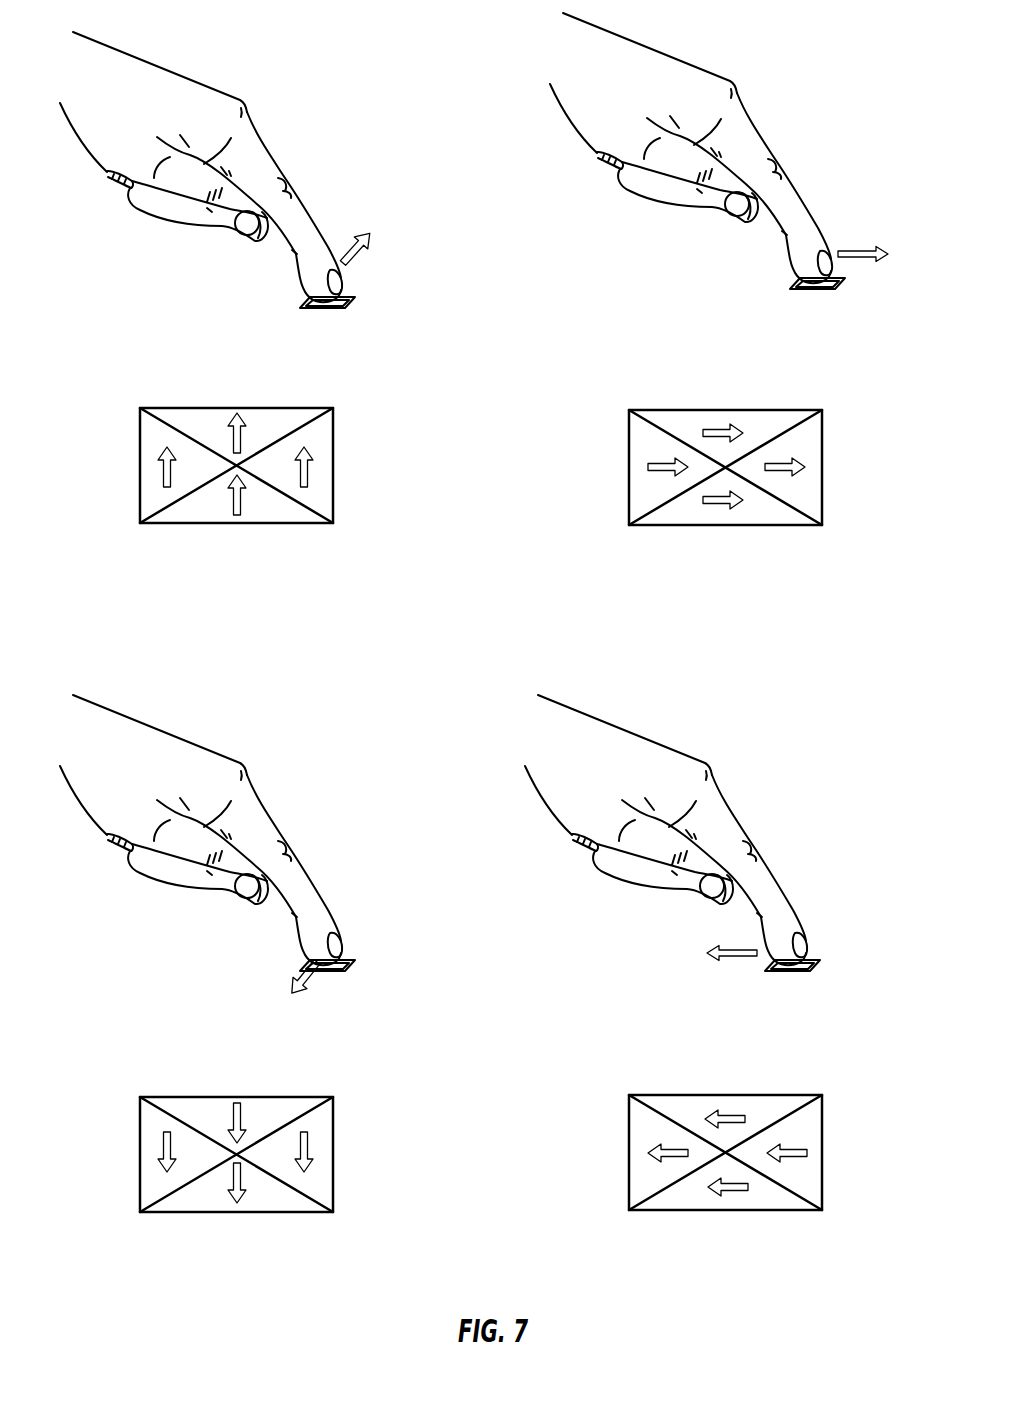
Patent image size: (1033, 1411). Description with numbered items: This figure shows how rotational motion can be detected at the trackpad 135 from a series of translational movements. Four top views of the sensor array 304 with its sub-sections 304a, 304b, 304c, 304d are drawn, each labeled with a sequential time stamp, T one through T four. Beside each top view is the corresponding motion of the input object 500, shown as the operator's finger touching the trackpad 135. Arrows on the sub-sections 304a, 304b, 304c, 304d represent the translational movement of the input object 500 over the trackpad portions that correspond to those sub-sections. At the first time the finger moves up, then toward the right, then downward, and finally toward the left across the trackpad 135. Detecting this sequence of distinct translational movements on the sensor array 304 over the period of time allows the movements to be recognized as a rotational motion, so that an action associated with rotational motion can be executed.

The input object 500 is at (157, 74).
The trackpad 135 is at (352, 300).
The sensor array 304 is at (151, 366).
The sub-section 304a is at (153, 465).
The sub-section 304b is at (262, 418).
The sub-section 304c is at (323, 465).
The sub-section 304d is at (180, 512).